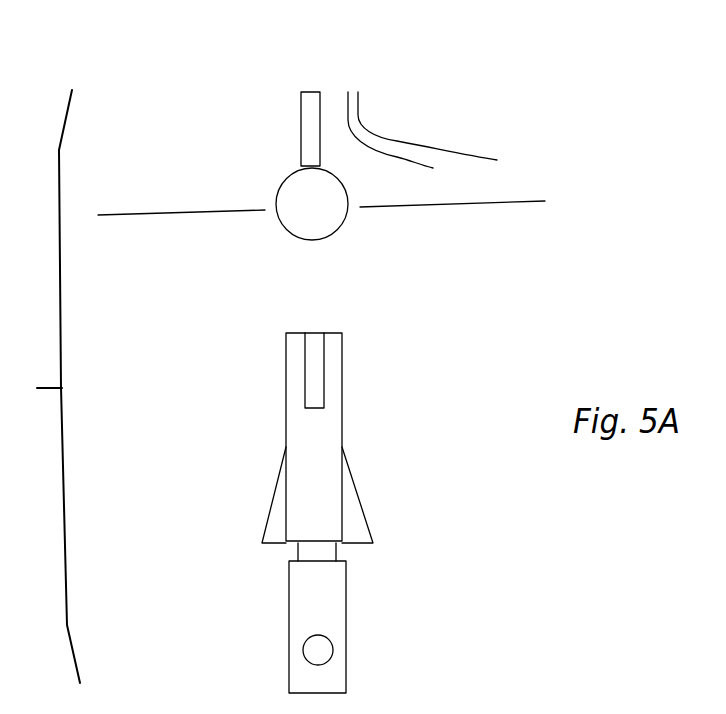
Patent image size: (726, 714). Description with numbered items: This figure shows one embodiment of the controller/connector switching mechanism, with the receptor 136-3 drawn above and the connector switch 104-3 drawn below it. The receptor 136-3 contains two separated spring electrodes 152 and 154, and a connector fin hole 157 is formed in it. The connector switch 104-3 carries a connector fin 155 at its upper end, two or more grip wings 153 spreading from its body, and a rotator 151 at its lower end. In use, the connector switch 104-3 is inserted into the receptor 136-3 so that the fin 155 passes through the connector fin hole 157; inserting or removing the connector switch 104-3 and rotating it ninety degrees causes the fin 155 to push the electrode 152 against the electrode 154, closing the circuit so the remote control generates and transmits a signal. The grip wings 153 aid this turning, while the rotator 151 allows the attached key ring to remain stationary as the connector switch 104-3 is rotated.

The connector fin hole 157 is at (301, 123).
The receptor 136-3 is at (277, 193).
The spring electrode 152 is at (480, 202).
The spring electrode 154 is at (527, 200).
The connector fin 155 is at (305, 379).
The connector switch 104-3 is at (343, 437).
The grip wings 153 is at (275, 489).
The rotator 151 is at (346, 607).